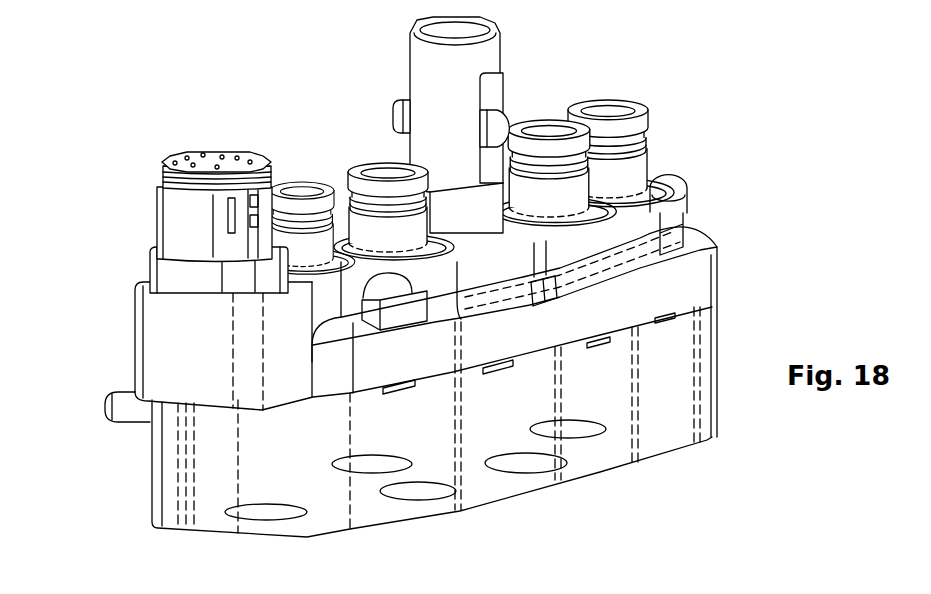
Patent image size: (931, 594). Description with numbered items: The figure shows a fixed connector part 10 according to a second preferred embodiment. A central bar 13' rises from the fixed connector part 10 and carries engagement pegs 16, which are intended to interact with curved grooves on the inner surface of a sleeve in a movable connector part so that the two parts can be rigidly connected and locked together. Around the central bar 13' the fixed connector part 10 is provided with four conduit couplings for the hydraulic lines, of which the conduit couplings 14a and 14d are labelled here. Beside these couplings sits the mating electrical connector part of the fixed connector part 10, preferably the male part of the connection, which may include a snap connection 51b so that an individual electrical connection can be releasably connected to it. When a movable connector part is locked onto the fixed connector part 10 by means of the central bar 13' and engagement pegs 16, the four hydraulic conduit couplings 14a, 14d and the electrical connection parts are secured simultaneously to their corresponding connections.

The fixed connector part 10 is at (160, 345).
The central bar 13' is at (432, 125).
The conduit coupling 14a is at (330, 187).
The conduit coupling 14d is at (632, 163).
The engagement pegs 16 is at (505, 128).
The snap connection 51b is at (268, 163).